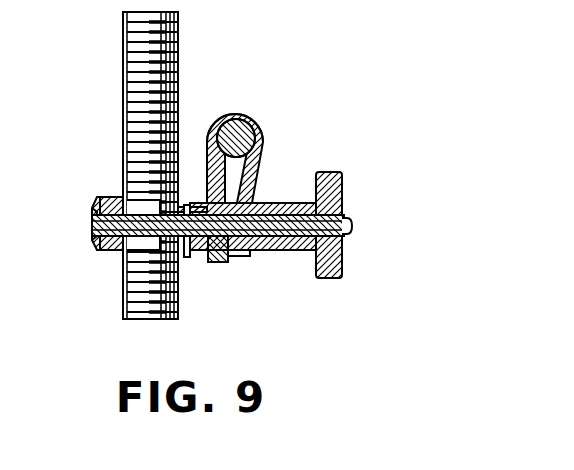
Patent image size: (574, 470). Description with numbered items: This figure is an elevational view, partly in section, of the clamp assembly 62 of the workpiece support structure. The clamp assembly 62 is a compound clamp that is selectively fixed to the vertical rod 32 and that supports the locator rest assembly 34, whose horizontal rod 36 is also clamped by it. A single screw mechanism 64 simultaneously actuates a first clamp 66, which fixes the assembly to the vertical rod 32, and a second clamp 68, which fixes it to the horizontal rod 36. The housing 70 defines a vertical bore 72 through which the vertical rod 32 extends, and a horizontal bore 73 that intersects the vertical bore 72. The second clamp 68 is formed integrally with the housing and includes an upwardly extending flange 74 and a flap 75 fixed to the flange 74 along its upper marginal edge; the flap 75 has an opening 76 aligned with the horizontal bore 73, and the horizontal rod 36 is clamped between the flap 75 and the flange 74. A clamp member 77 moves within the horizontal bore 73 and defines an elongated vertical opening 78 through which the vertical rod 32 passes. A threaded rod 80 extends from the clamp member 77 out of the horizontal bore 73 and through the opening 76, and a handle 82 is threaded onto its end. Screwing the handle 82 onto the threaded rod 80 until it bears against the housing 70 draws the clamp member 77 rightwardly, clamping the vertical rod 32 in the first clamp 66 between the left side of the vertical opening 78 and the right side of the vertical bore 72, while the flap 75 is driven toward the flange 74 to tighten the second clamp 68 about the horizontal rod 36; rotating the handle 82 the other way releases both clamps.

The vertical rod 32 is at (131, 58).
The locator rest assembly 34 is at (244, 113).
The horizontal rod 36 is at (231, 123).
The clamp assembly 62 is at (329, 87).
The screw mechanism 64 is at (294, 257).
The first clamp 66 is at (108, 250).
The second clamp 68 is at (263, 168).
The housing 70 is at (209, 262).
The vertical bore 72 is at (134, 196).
The horizontal bore 73 is at (92, 236).
The flange 74 is at (208, 175).
The flap 75 is at (258, 179).
The opening 76 is at (247, 252).
The clamp member 77 is at (92, 218).
The vertical opening 78 is at (185, 250).
The threaded rod 80 is at (353, 224).
The handle 82 is at (338, 172).